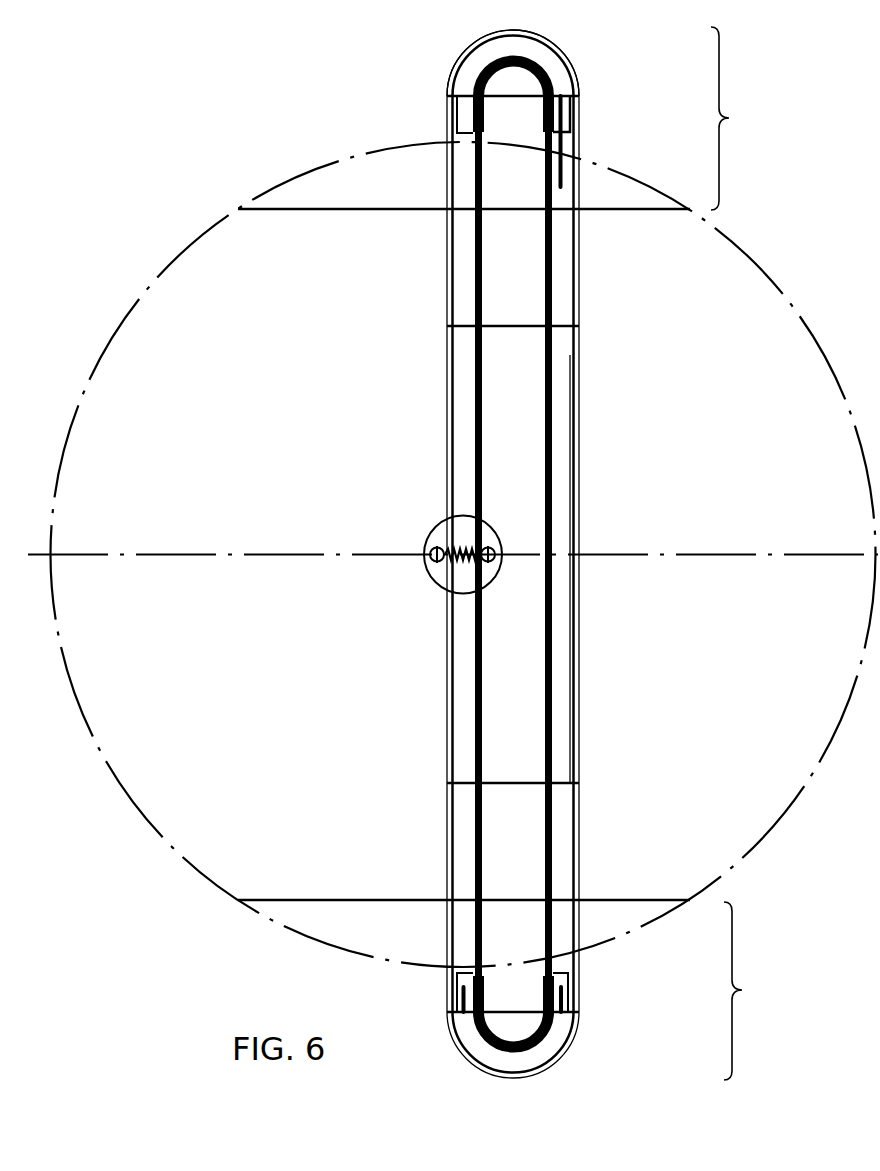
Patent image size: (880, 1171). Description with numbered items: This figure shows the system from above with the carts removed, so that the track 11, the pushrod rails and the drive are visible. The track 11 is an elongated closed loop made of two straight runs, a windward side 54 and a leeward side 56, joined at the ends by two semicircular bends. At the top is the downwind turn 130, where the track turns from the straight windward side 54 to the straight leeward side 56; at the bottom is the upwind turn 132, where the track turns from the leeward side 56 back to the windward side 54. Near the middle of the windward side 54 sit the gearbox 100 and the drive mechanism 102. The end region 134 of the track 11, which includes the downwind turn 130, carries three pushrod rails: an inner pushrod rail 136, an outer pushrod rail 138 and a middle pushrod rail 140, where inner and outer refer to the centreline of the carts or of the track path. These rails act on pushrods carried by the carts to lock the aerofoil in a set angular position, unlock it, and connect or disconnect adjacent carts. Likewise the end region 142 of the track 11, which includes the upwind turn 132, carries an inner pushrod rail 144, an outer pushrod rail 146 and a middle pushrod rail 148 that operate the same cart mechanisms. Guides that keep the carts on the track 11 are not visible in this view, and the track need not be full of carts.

The track 11 is at (578, 500).
The windward side 54 is at (447, 672).
The leeward side 56 is at (580, 596).
The gearbox 100 is at (428, 535).
The drive mechanism 102 is at (437, 566).
The downwind turn 130 is at (450, 77).
The upwind turn 132 is at (573, 1048).
The end region 134 is at (746, 118).
The inner pushrod rail 136 is at (480, 67).
The outer pushrod rail 138 is at (565, 63).
The middle pushrod rail 140 is at (562, 143).
The end region 142 is at (765, 991).
The inner pushrod rail 144 is at (555, 982).
The outer pushrod rail 146 is at (447, 990).
The middle pushrod rail 148 is at (567, 996).